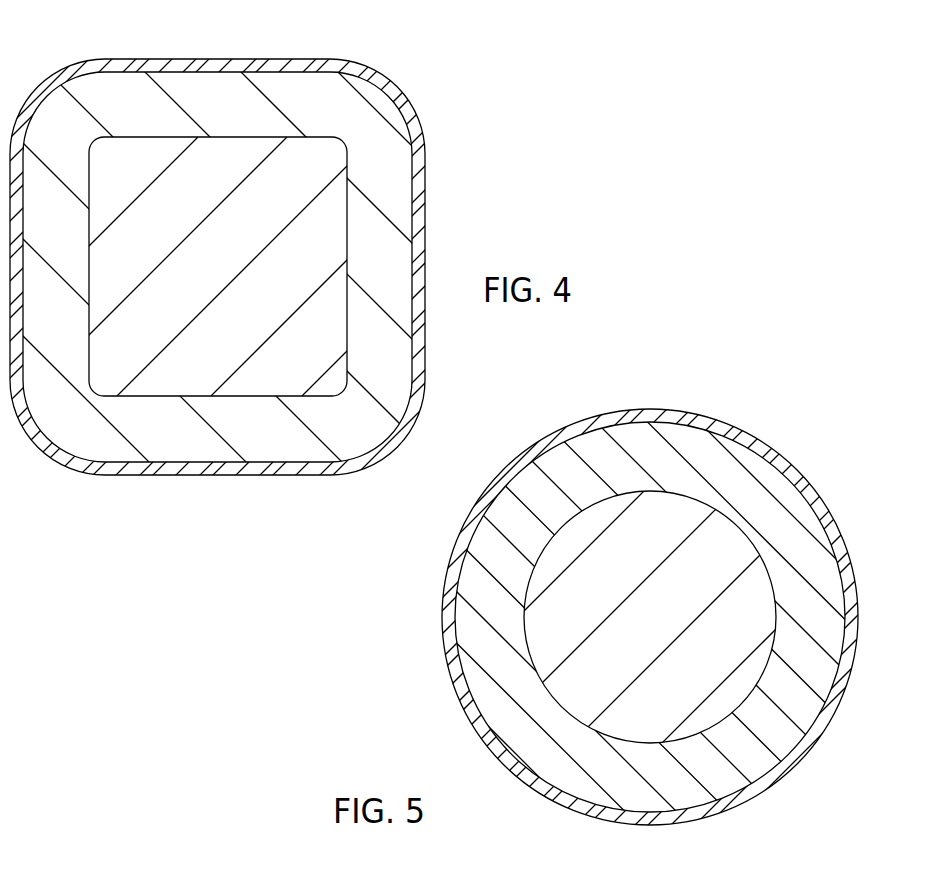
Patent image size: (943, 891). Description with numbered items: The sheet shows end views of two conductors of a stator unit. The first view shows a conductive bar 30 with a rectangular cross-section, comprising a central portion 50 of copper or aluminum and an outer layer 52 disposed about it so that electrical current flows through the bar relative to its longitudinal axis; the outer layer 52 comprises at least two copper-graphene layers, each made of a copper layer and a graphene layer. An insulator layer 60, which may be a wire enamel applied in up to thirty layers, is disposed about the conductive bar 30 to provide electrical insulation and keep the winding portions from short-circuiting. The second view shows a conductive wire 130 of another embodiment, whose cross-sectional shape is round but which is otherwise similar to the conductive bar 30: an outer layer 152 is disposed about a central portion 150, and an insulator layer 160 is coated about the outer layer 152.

In FIG. 4, the conductive bar 30 is at (438, 67).
In FIG. 4, the insulator layer 60 is at (425, 202).
In FIG. 4, the outer layer 52 is at (236, 116).
In FIG. 4, the central portion 50 is at (248, 250).
In FIG. 5, the conductive wire 130 is at (705, 370).
In FIG. 5, the insulator layer 160 is at (742, 440).
In FIG. 5, the outer layer 152 is at (689, 470).
In FIG. 5, the central portion 150 is at (684, 624).